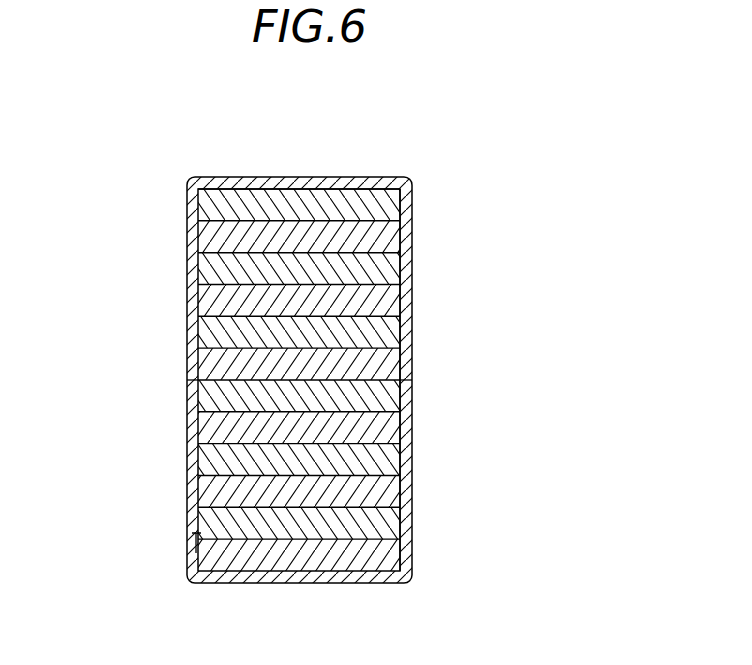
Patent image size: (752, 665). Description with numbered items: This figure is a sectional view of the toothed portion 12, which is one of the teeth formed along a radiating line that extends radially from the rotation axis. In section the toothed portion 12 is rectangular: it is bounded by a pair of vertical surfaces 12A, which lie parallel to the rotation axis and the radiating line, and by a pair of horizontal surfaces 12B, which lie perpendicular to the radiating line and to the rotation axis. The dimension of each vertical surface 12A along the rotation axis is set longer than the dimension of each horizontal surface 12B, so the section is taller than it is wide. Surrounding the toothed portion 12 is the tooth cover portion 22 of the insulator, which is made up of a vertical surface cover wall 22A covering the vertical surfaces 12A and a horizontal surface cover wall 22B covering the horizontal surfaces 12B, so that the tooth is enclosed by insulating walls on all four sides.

The toothed portion 12 is at (393, 295).
The vertical surface 12A is at (400, 234).
The horizontal surface 12B is at (232, 189).
The tooth cover portion 22 is at (299, 380).
The vertical surface cover wall 22A is at (187, 315).
The horizontal surface cover wall 22B is at (303, 177).